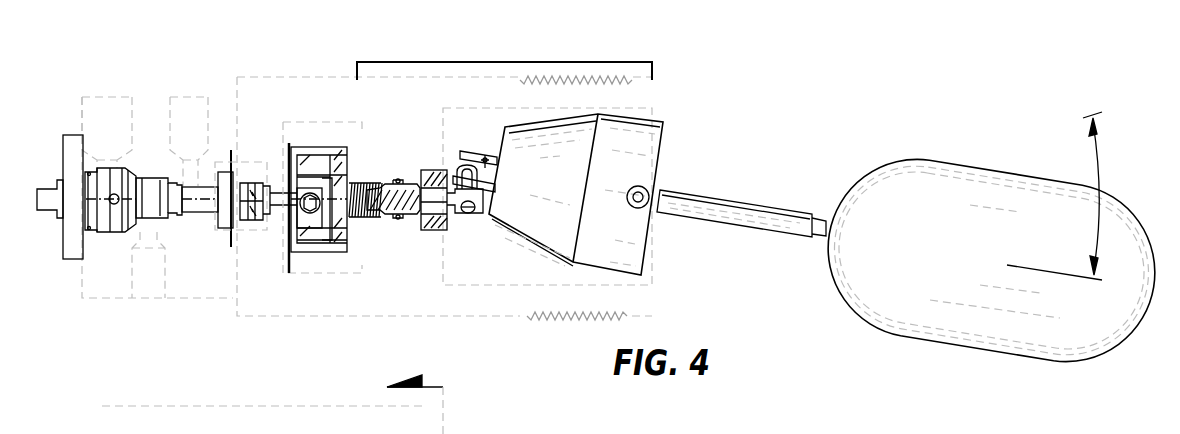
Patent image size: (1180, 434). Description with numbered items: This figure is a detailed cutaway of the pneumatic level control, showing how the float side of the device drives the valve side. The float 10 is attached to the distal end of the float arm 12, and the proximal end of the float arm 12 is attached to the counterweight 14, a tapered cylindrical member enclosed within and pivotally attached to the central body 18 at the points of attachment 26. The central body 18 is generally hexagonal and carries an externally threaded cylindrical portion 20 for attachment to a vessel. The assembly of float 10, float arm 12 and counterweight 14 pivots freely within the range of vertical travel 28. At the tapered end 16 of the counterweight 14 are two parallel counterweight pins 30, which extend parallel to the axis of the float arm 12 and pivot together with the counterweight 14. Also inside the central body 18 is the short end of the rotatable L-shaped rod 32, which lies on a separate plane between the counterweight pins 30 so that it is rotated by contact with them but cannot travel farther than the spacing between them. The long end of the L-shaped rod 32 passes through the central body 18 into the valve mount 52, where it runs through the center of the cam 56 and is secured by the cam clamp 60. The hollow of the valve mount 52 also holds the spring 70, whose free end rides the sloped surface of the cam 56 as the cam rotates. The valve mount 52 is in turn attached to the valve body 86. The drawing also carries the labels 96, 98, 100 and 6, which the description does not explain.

The float 10 is at (928, 167).
The float arm 12 is at (737, 232).
The counterweight 14 is at (665, 124).
The tapered end 16 is at (540, 132).
The central body 18 is at (508, 61).
The externally threaded cylindrical portion 20 is at (545, 315).
The points of attachment 26 is at (645, 188).
The range of vertical travel 28 is at (1098, 153).
The counterweight pins 30 is at (464, 160).
The L-shaped rod 32 is at (480, 157).
The valve mount 52 is at (327, 318).
The cam 56 is at (316, 146).
The cam clamp 60 is at (313, 222).
The spring 70 is at (290, 173).
The valve body 86 is at (202, 300).
The inlet port 96 is at (118, 103).
The outlet port 98 is at (188, 103).
The drain port 100 is at (152, 296).
The section line 6 is at (274, 392).